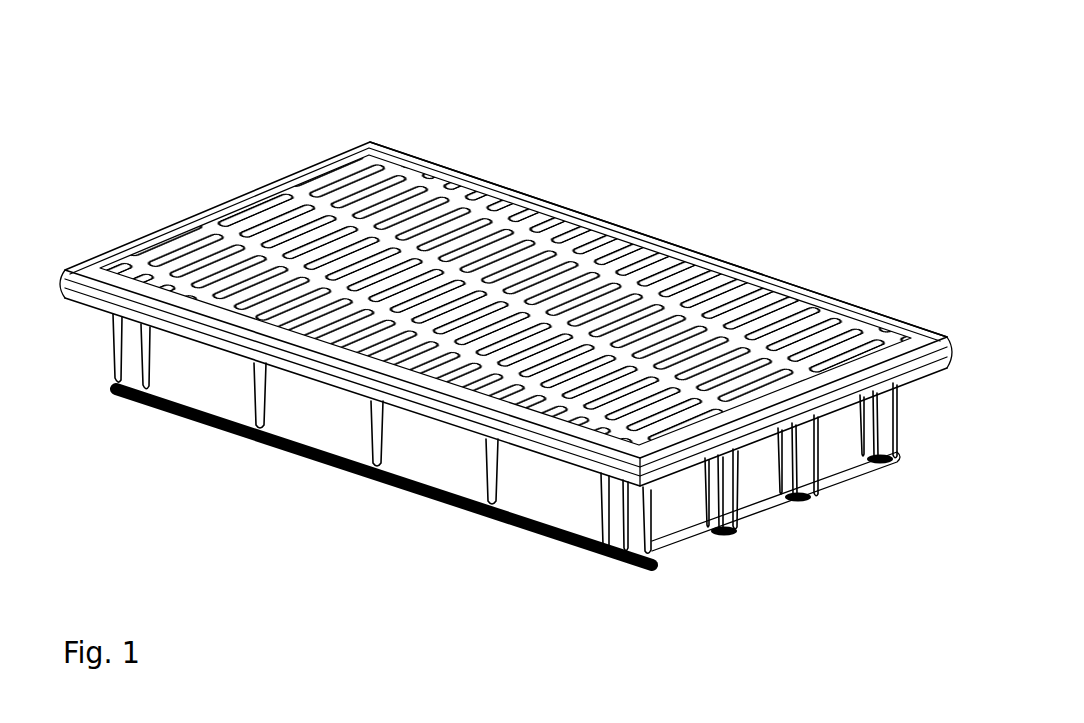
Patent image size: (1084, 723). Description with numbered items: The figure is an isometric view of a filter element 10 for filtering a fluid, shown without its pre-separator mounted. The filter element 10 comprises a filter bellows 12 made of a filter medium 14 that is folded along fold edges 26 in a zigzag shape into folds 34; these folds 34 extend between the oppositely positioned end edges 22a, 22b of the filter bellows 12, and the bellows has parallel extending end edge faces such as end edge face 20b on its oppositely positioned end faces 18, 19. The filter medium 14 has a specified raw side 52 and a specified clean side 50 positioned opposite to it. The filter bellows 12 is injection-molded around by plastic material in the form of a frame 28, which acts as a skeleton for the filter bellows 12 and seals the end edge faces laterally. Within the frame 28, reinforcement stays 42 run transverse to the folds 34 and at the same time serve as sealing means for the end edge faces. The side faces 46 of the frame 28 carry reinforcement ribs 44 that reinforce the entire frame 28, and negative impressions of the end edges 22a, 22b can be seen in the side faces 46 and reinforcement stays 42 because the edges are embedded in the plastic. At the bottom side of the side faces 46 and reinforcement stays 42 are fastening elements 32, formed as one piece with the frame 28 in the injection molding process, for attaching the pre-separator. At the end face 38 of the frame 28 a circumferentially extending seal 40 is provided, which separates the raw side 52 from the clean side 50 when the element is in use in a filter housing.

The filter element 10 is at (272, 100).
The filter bellows 12 is at (514, 322).
The filter medium 14 is at (208, 280).
The end face 18 is at (473, 480).
The end face 19 is at (583, 203).
The end edge face 20b is at (780, 323).
The end edge 22a is at (445, 422).
The end edge 22b is at (713, 282).
The fold edges 26 is at (272, 247).
The frame 28 is at (620, 545).
The fastening elements 32 is at (527, 523).
The folds 34 is at (234, 201).
The end face 38 is at (75, 263).
The seal 40 is at (87, 307).
The reinforcement stays 42 is at (318, 208).
The reinforcement ribs 44 is at (147, 380).
The side faces 46 is at (477, 497).
The clean side 50 is at (438, 202).
The raw side 52 is at (752, 500).